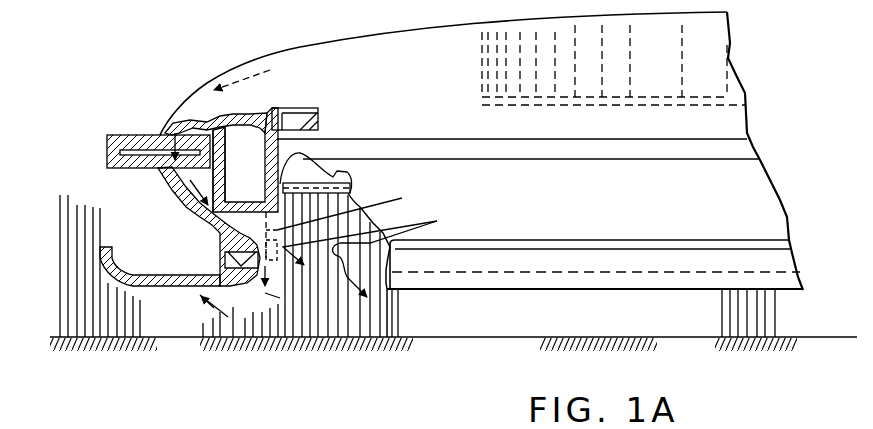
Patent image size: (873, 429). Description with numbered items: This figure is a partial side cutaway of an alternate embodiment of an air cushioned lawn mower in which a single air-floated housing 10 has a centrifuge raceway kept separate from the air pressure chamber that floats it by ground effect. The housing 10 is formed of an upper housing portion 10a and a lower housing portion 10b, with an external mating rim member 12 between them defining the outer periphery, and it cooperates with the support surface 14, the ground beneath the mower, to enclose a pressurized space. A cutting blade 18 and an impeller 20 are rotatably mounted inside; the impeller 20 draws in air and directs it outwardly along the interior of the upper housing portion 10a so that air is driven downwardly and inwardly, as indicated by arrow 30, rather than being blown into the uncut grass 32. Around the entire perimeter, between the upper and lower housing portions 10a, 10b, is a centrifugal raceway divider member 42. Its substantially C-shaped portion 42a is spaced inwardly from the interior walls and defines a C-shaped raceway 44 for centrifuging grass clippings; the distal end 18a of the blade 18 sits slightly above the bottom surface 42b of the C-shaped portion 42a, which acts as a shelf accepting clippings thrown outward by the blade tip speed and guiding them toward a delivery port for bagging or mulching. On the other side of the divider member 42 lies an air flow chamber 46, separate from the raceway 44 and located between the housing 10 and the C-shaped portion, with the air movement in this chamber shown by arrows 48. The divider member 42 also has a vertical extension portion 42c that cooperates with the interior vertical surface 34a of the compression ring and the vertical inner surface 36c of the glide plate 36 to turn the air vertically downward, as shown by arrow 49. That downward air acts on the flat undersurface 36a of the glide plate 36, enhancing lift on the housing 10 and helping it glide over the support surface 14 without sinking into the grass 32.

The lawn mower housing 10 is at (305, 30).
The upper housing portion 10a is at (208, 84).
The lower housing portion 10b is at (154, 178).
The external mating rim member 12 is at (107, 143).
The support surface 14 is at (513, 337).
The cutting blade 18 is at (347, 172).
The distal end of blade 18a is at (285, 163).
The impeller 20 is at (483, 70).
The arrow indicating air direction 30 is at (543, 251).
The uncut grass 32 is at (398, 312).
The interior vertical surface of compression ring 34a is at (258, 282).
The glide plate 36 is at (131, 275).
The undersurface of glide plate 36a is at (170, 287).
The vertical inner surface of glide plate 36c is at (243, 300).
The centrifugal raceway divider member 42 is at (184, 152).
The C-shaped portion 42a is at (247, 113).
The bottom surface of C-shaped portion 42b is at (262, 186).
The vertical extension portion 42c is at (275, 277).
The C-shaped raceway 44 is at (242, 152).
The air flow chamber 46 is at (197, 178).
The arrows indicating air flow in chamber 48 is at (189, 218).
The arrow indicating downward air flow 49 is at (265, 295).